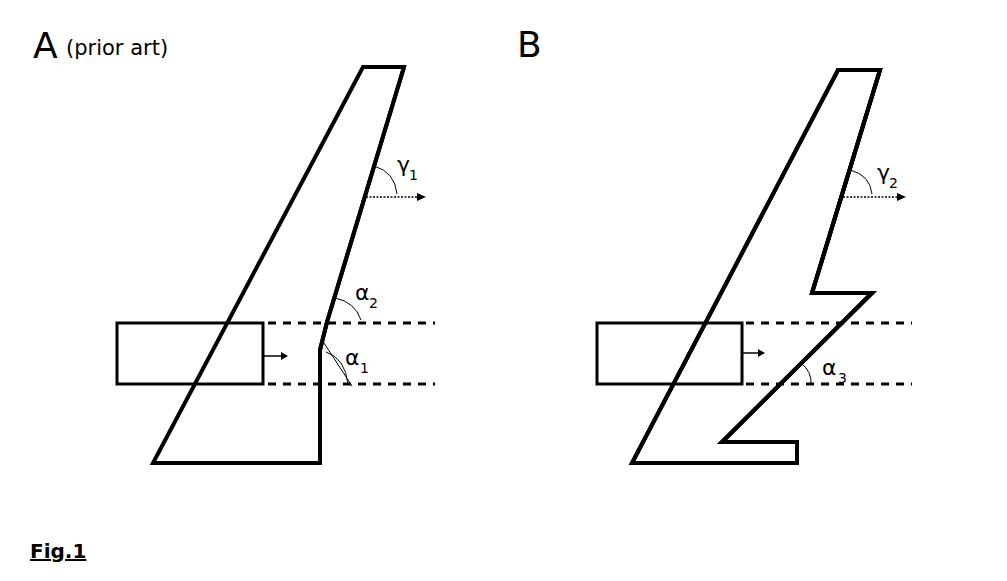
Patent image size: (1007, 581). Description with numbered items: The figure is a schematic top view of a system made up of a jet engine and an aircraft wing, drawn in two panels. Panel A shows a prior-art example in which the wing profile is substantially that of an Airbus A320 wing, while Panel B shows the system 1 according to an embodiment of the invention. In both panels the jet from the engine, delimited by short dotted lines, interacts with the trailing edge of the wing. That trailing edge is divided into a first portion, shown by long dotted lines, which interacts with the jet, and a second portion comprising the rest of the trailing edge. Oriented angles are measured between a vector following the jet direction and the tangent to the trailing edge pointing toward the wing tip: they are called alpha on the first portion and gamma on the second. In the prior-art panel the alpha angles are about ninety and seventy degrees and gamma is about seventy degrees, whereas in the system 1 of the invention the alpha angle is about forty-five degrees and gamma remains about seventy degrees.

The system 1 is at (740, 146).